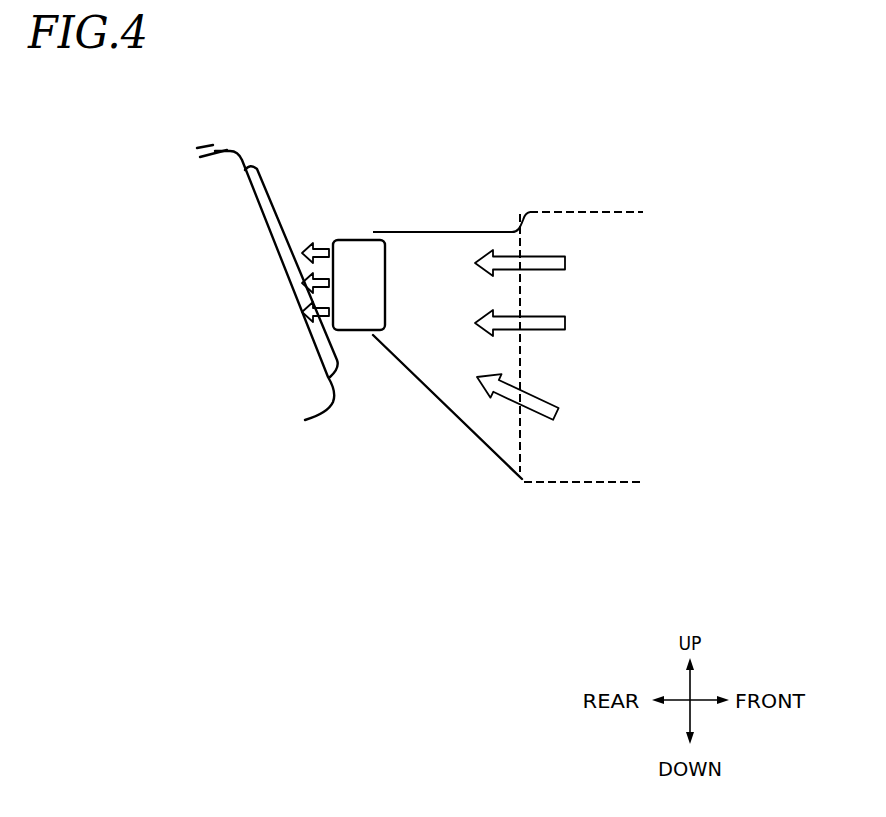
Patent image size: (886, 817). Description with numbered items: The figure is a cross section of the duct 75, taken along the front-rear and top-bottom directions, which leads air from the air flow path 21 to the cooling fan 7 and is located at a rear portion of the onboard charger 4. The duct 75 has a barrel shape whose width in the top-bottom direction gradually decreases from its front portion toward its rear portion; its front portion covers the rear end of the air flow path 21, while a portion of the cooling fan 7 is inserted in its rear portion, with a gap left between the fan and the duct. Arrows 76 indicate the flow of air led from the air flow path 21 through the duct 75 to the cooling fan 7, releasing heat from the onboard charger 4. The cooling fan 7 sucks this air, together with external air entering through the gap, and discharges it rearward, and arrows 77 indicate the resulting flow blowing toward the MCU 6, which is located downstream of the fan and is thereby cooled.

The onboard charger 4 is at (620, 482).
The MCU 6 is at (230, 157).
The cooling fan 7 is at (352, 247).
The air flow path 21 is at (602, 288).
The duct 75 is at (438, 373).
The arrows indicating air flow led from the air flow path to the cooling fan 76 is at (532, 260).
The arrows indicating air flow blowing toward the MCU 77 is at (312, 247).